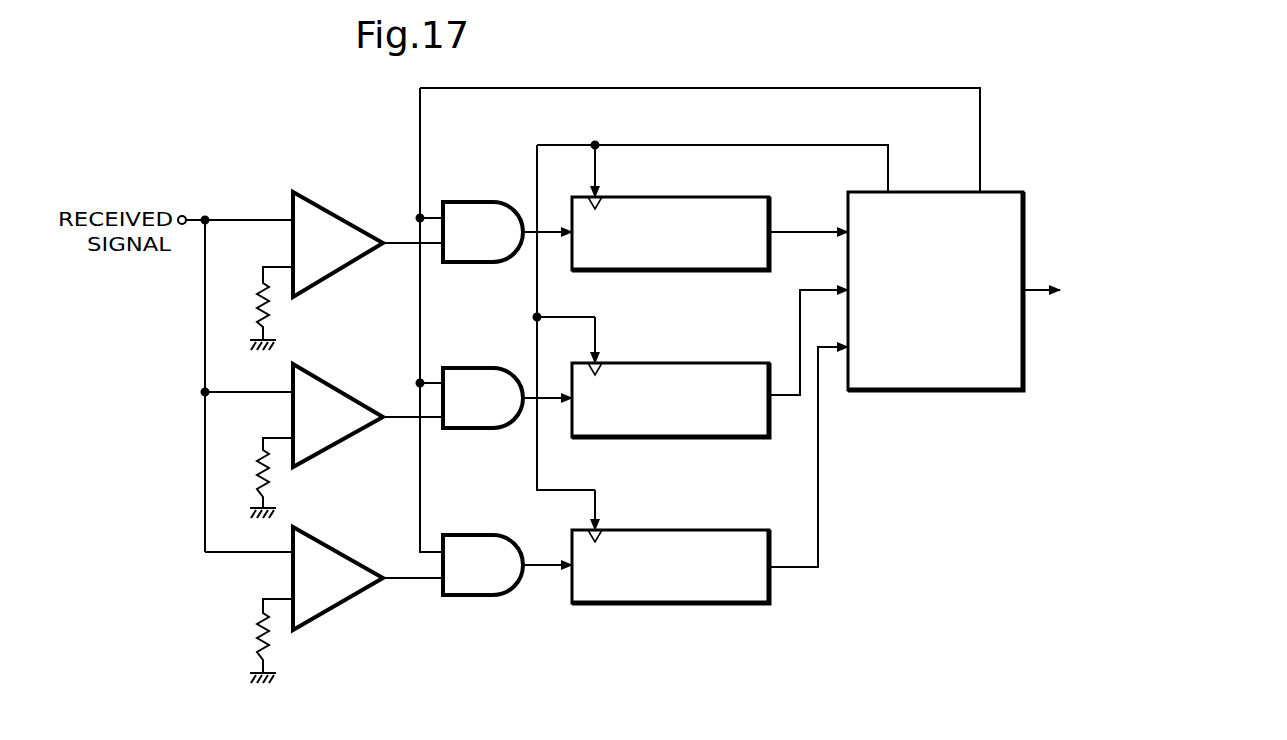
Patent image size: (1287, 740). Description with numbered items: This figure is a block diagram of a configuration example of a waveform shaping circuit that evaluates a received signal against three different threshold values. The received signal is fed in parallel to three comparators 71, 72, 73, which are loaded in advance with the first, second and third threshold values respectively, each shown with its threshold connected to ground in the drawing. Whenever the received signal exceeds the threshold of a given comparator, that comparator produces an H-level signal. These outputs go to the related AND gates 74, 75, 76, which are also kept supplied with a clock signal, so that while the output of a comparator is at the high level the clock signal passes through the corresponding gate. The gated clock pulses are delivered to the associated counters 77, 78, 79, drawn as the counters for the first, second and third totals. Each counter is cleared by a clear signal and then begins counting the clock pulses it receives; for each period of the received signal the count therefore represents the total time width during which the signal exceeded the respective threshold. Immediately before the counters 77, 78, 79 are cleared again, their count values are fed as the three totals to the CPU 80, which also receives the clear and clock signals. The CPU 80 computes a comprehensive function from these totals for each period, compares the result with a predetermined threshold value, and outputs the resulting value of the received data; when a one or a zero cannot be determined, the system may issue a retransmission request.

The comparator 71 is at (360, 560).
The comparator 72 is at (362, 398).
The comparator 73 is at (355, 223).
The AND gate 74 is at (497, 595).
The AND gate 75 is at (487, 428).
The AND gate 76 is at (482, 263).
The counter 77 is at (769, 583).
The counter 78 is at (728, 437).
The counter 79 is at (715, 270).
The CPU 80 is at (1020, 190).